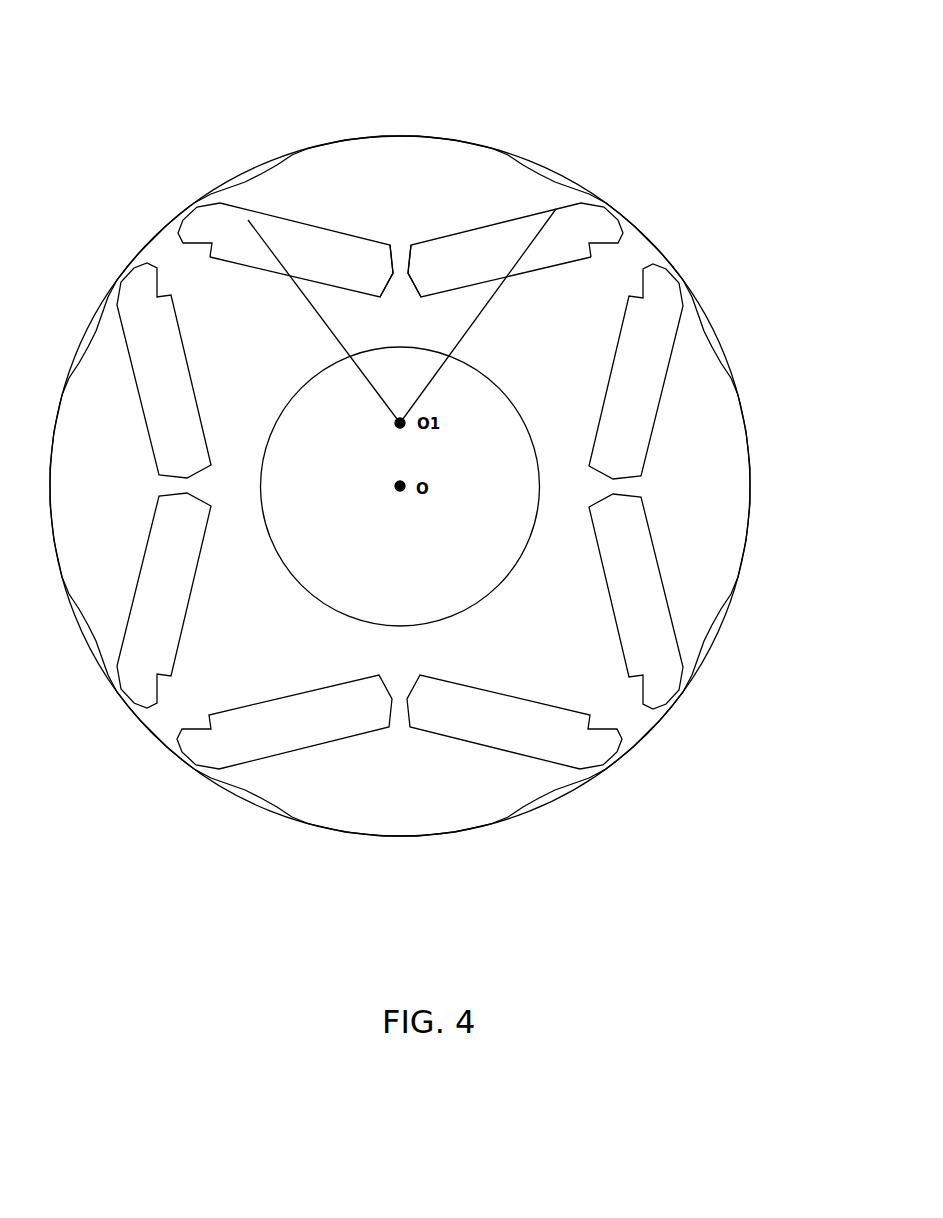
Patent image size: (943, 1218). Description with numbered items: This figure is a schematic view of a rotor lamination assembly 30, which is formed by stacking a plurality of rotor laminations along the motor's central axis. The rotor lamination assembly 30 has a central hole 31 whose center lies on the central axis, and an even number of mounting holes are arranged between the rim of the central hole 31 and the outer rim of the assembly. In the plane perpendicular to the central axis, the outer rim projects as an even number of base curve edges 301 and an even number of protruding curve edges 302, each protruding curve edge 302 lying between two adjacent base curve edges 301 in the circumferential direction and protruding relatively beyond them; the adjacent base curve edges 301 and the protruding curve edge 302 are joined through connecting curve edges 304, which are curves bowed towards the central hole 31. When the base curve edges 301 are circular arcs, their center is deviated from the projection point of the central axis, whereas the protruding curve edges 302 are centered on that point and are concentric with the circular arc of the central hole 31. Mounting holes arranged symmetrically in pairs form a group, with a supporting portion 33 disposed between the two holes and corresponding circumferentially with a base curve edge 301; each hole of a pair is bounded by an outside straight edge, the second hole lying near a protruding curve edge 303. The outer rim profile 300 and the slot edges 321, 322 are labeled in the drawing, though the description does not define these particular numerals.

The rotor lamination assembly 30 is at (688, 102).
The outer peripheral surface 300 is at (718, 330).
The base curve edge 301 is at (405, 137).
The protruding curve edge 302 is at (183, 212).
The protruding curve edge 303 is at (654, 240).
The connecting curve edge 304 is at (553, 210).
The central hole 31 is at (313, 374).
The first magnet slot 321 is at (247, 222).
The second magnet slot 322 is at (516, 239).
The supporting portion 33 is at (399, 292).